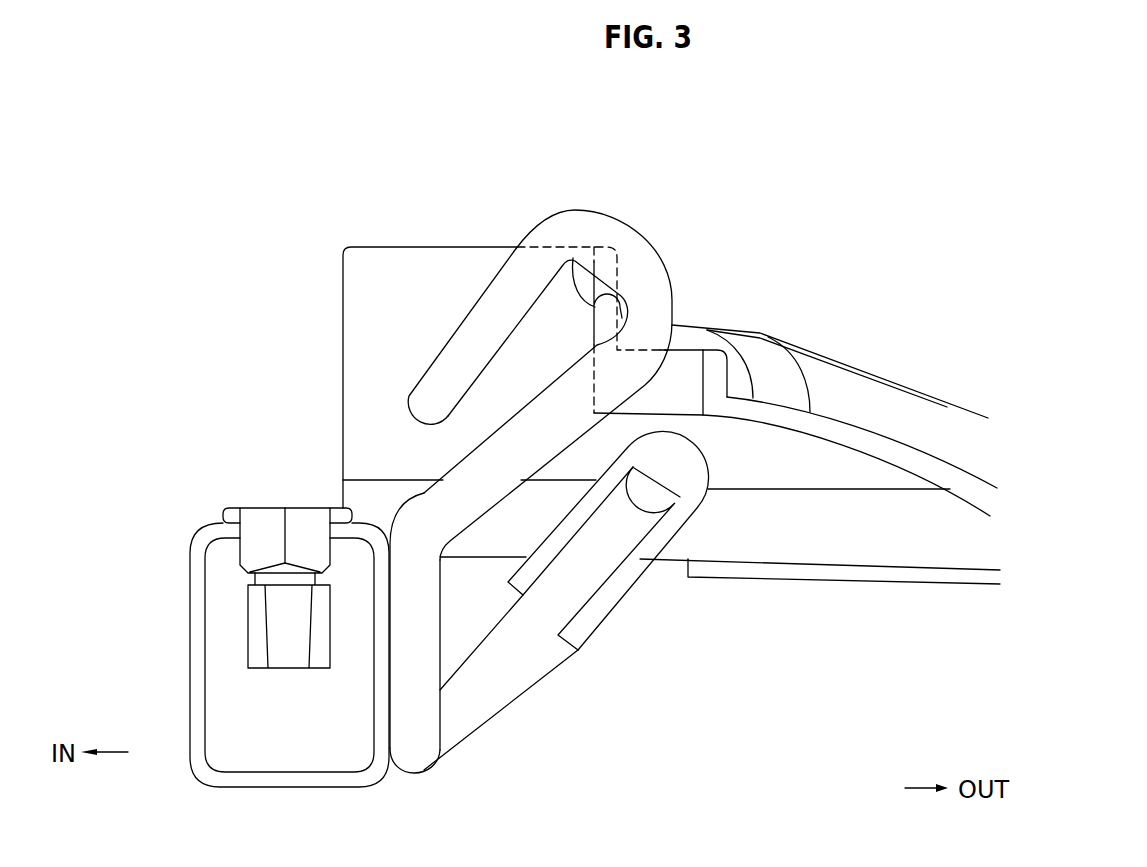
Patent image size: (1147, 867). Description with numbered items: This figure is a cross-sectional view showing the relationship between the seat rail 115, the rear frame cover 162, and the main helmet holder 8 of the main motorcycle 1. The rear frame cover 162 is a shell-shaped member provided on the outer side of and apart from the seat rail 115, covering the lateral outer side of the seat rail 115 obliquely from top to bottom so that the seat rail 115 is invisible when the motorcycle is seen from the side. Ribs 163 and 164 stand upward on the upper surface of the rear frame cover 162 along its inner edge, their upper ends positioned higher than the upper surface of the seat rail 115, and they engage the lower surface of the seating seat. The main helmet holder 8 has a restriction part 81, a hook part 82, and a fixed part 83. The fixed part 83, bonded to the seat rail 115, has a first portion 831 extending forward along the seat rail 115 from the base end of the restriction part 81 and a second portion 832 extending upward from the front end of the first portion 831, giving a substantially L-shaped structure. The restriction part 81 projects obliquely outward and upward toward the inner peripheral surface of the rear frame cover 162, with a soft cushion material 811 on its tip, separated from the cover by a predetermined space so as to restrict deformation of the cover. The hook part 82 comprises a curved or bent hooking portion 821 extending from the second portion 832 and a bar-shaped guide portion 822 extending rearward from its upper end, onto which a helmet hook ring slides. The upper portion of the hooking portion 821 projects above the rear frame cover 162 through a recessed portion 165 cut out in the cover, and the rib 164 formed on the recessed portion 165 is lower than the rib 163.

The main motorcycle 1 is at (652, 509).
The main helmet holder 8 is at (533, 487).
The restriction part 81 is at (571, 600).
The cushion material 811 is at (633, 580).
The hook part 82 is at (492, 357).
The hooking portion 821 is at (530, 430).
The guide portion 822 is at (515, 273).
The fixed part 83 is at (509, 662).
The first portion 831 is at (414, 771).
The second portion 832 is at (430, 657).
The seat rail 115 is at (287, 787).
The rear frame cover 162 is at (858, 363).
The rib 163 is at (579, 252).
The rib 164 is at (727, 372).
The recessed portion 165 is at (678, 368).